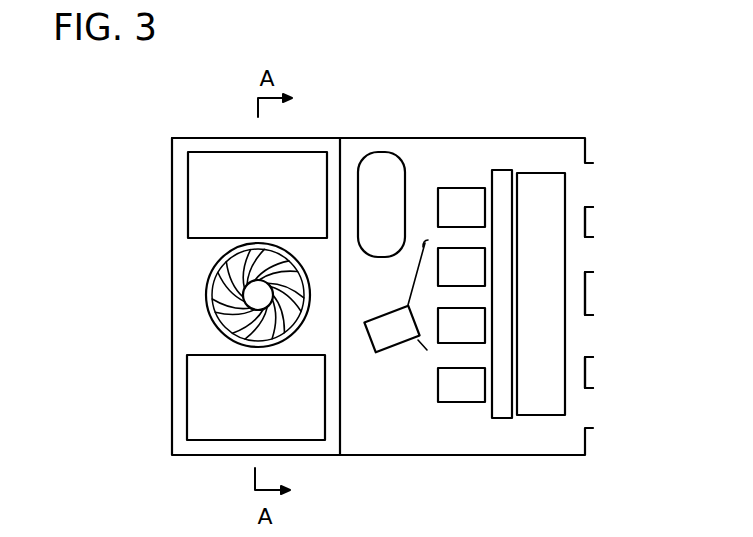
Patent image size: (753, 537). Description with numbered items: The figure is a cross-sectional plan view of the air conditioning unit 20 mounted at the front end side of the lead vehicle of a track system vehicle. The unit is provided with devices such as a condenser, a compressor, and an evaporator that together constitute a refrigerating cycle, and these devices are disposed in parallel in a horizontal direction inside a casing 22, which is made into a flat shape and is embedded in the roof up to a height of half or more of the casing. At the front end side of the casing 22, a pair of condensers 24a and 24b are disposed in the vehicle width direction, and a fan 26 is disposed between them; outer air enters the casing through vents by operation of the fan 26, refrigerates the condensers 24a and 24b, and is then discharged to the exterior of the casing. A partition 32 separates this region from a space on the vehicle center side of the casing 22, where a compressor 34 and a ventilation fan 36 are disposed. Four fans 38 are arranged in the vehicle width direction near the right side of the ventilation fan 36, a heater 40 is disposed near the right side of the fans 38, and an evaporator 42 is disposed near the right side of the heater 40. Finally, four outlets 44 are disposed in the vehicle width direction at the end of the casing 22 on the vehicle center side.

The air conditioning unit 20 is at (485, 133).
The casing 22 is at (560, 137).
The condenser 24a is at (195, 193).
The condenser 24b is at (203, 402).
The fan 26 is at (207, 298).
The partition 32 is at (346, 432).
The compressor 34 is at (380, 158).
The ventilation fan 36 is at (382, 333).
The fans 38 is at (468, 397).
The heater 40 is at (502, 413).
The evaporator 42 is at (545, 410).
The outlets 44 is at (590, 276).